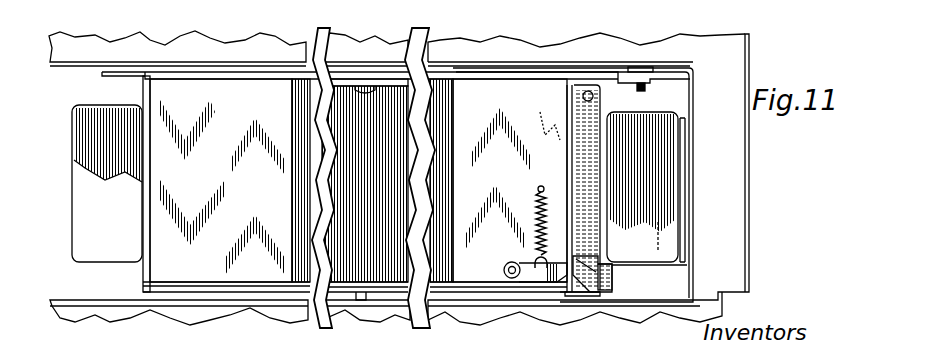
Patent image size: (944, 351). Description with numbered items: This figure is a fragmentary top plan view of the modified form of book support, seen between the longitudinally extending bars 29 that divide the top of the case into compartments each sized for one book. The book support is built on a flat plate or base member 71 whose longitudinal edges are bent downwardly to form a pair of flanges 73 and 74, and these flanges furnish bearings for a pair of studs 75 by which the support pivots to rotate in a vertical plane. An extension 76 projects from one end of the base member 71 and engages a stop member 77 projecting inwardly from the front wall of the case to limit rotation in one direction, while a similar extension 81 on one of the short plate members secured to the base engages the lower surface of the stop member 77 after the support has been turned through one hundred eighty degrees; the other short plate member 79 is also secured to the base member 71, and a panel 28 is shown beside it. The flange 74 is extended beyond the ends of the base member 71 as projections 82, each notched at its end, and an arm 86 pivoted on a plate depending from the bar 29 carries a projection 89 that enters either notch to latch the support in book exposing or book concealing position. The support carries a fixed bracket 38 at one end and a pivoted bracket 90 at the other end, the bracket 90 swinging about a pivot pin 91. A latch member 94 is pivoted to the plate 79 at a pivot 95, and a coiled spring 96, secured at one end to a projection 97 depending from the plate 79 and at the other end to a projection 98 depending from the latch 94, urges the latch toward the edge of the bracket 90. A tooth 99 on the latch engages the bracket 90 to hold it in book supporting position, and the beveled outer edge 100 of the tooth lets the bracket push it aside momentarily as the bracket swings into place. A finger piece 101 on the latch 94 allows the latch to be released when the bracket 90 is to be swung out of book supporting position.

The panel 28 is at (192, 270).
The bar 29 is at (203, 48).
The fixed bracket 38 is at (145, 270).
The base member 71 is at (307, 277).
The flange 73 is at (440, 292).
The flange 74 is at (427, 78).
The stud 75 is at (360, 72).
The extension 76 is at (647, 190).
The stop member 77 is at (683, 160).
The plate member 79 is at (498, 92).
The extension 81 is at (92, 250).
The projection 82 is at (122, 72).
The arm 86 is at (640, 67).
The projection 89 is at (646, 88).
The pivoted bracket 90 is at (568, 158).
The pivot pin 91 is at (583, 96).
The latch member 94 is at (528, 278).
The pivot 95 is at (504, 269).
The coiled spring 96 is at (538, 210).
The projection 97 is at (538, 189).
The projection 98 is at (537, 259).
The tooth 99 is at (583, 262).
The beveled edge 100 is at (610, 266).
The finger piece 101 is at (570, 296).